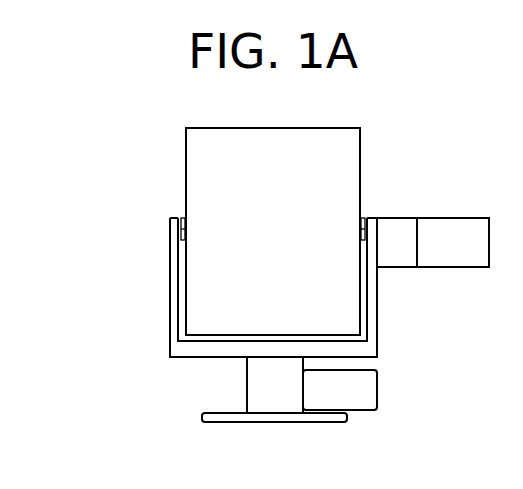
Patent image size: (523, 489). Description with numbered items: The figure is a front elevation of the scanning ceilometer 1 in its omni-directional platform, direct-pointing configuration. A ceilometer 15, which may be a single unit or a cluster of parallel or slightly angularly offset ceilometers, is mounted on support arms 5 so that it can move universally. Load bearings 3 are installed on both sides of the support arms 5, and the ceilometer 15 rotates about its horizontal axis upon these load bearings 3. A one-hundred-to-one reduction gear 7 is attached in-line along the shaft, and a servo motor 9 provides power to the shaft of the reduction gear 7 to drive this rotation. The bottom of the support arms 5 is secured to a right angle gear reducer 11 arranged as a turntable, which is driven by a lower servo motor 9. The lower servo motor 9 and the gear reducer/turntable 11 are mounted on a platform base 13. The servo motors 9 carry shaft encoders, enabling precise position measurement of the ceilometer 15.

The scanning ceilometer 1 is at (76, 168).
The load bearings 3 is at (182, 214).
The support arms 5 is at (170, 284).
The reduction gear 7 is at (403, 216).
The servo motor 9 is at (378, 390).
The right angle gear reducer 11 is at (246, 387).
The platform base 13 is at (350, 420).
The ceilometer 15 is at (205, 315).